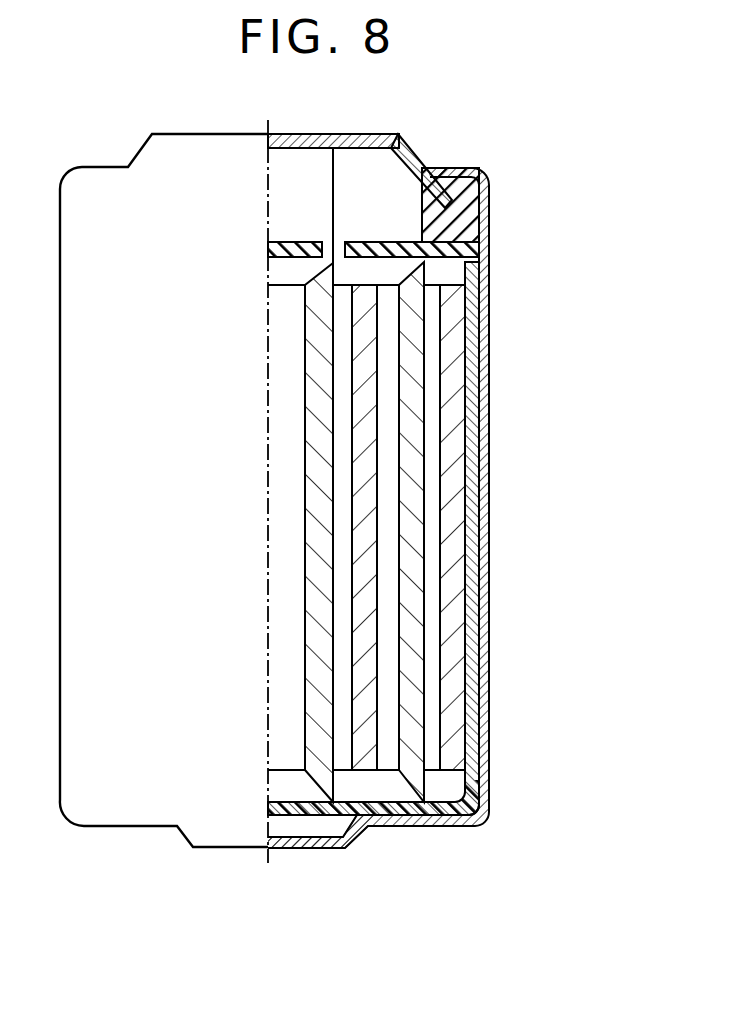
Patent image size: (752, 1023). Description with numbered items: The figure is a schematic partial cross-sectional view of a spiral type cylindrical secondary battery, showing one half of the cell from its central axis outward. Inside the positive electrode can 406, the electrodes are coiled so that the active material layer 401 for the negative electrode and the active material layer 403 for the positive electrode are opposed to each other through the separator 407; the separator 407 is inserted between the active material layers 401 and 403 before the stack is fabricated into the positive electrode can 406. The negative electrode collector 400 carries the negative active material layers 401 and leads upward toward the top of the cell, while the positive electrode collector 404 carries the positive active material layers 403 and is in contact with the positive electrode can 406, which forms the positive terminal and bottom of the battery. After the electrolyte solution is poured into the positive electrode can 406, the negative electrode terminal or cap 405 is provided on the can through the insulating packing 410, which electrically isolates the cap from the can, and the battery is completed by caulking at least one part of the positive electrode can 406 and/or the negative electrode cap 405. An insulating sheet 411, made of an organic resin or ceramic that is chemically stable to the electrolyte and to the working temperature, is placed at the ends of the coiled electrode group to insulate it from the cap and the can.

The negative electrode collector 400 is at (335, 197).
The active material layers for the negative electrode 401 is at (415, 445).
The active material layers for the positive electrode 403 is at (457, 695).
The positive electrode collector 404 is at (473, 605).
The negative electrode terminal or cap 405 is at (375, 134).
The positive electrode can 406 is at (350, 840).
The separators 407 is at (388, 368).
The insulating packing 410 is at (475, 218).
The insulating sheet 411 is at (468, 247).